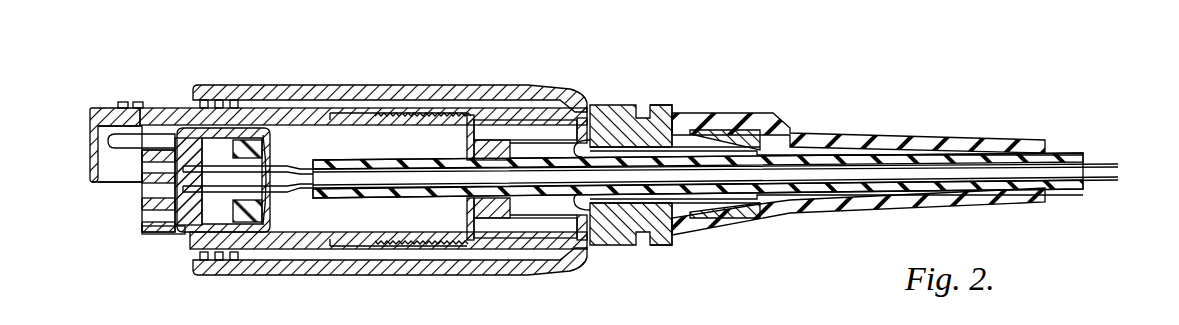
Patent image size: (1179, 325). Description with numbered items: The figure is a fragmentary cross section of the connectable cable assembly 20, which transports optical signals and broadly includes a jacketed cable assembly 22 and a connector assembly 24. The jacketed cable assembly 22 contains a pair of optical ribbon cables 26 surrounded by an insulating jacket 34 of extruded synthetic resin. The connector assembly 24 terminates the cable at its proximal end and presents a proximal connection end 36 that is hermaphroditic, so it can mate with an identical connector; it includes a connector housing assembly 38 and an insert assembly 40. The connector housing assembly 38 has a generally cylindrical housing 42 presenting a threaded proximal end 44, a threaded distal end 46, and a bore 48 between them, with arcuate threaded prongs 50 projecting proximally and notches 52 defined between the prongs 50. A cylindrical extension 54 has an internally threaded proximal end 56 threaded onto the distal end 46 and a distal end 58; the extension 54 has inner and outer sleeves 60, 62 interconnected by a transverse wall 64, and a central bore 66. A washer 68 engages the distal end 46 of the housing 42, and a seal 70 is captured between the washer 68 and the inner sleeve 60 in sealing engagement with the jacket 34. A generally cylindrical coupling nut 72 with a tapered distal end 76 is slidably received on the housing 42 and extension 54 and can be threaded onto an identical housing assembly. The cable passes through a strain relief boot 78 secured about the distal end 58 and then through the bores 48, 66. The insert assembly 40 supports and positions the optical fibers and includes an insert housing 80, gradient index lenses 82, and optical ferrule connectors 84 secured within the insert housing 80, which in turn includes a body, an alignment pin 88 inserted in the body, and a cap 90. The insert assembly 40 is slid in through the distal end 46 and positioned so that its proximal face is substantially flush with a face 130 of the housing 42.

The connectable cable assembly 20 is at (840, 57).
The jacketed cable assembly 22 is at (1063, 157).
The connector assembly 24 is at (628, 110).
The optical ribbon cables 26 is at (1103, 163).
The insulating jacket 34 is at (1002, 183).
The proximal connection end 36 is at (131, 258).
The connector housing assembly 38 is at (628, 240).
The insert assembly 40 is at (237, 140).
The insert housing 80 is at (213, 143).
The housing 42 is at (250, 244).
The threaded proximal end 44 is at (111, 112).
The threaded distal end 46 is at (470, 118).
The bore 48 is at (293, 129).
The arcuate threaded prongs 50 is at (123, 106).
The notches 52 is at (113, 183).
The cylindrical extension 54 is at (660, 113).
The internally threaded proximal end 56 is at (338, 111).
The distal end 58 is at (738, 143).
The inner sleeve 60 is at (550, 209).
The outer sleeve 62 is at (507, 244).
The transverse wall 64 is at (603, 228).
The central bore 66 is at (574, 152).
The washer 68 is at (470, 134).
The seal 70 is at (493, 148).
The coupling nut 72 is at (395, 266).
The tapered distal end 76 is at (588, 57).
The strain relief boot 78 is at (927, 143).
The gradient index lenses 82 is at (143, 191).
The optical ferrule connectors 84 is at (193, 163).
The alignment pin 88 is at (118, 143).
The cap 90 is at (273, 217).
The face 130 is at (140, 233).